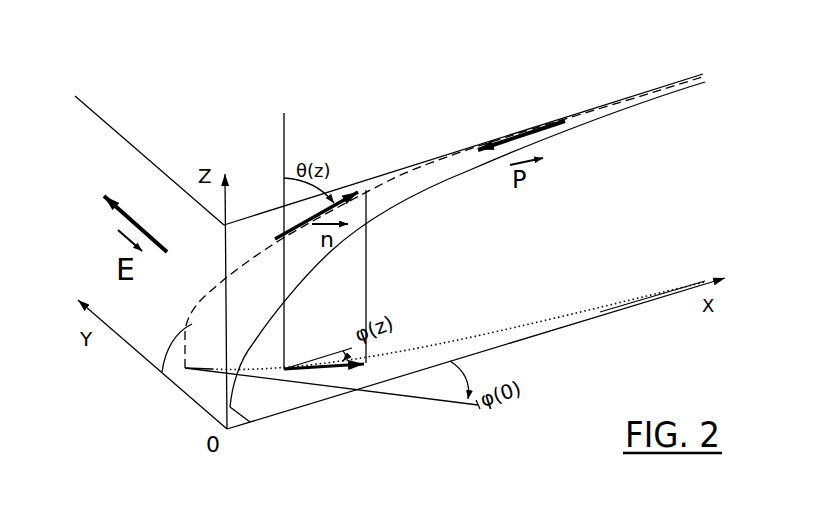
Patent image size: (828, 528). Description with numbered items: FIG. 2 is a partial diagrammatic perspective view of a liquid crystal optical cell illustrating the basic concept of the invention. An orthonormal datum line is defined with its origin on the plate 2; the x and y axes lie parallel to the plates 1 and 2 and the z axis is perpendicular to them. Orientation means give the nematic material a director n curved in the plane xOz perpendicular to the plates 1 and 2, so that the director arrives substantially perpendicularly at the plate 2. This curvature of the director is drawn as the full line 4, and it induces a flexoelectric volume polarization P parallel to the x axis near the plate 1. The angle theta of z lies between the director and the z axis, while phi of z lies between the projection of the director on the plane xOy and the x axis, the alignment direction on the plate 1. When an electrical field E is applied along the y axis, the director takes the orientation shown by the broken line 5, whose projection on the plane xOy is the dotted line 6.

The plate 1 is at (495, 94).
The plate 2 is at (627, 270).
The curvature of the nematic director 4 is at (422, 190).
The orientation of the nematic director after application of the electrical field 5 is at (161, 372).
The projection of the nematic director on the plane xOy 6 is at (492, 336).